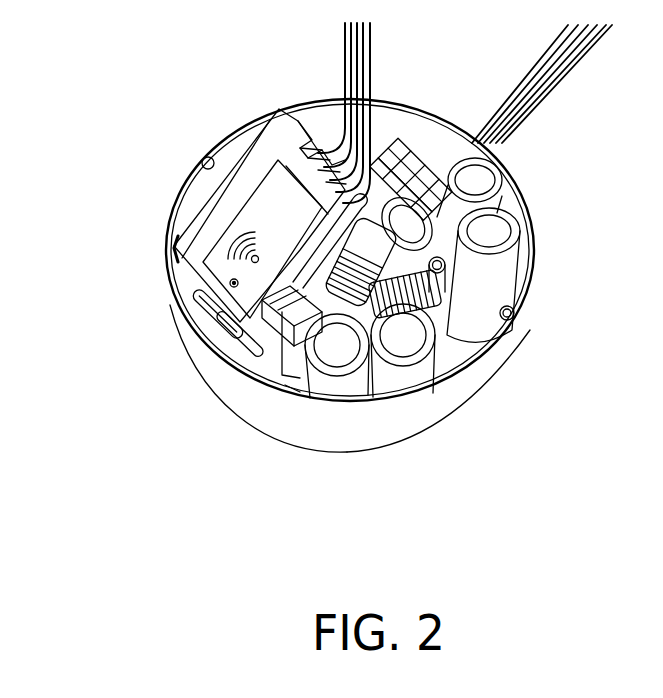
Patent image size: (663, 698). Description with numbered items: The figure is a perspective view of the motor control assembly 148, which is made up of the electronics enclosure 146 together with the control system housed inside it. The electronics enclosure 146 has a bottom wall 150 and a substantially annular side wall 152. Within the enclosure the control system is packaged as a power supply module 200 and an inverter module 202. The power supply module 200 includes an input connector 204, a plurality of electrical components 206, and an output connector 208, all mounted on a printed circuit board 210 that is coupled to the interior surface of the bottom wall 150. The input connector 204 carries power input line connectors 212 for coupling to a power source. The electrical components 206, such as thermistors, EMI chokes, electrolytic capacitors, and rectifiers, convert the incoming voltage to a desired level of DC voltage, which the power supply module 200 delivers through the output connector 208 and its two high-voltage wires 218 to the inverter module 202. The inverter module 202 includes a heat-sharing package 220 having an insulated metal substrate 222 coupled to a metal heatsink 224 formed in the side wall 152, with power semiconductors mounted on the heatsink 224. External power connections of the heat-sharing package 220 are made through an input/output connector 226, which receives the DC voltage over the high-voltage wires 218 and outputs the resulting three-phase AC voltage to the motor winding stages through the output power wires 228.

The electronics enclosure 146 is at (530, 211).
The motor control assembly 148 is at (120, 107).
The bottom wall 150 is at (380, 450).
The side wall 152 is at (463, 388).
The power supply module 200 is at (283, 375).
The inverter module 202 is at (165, 278).
The input connector 204 is at (430, 163).
The electrical components 206 is at (510, 250).
The output connector 208 is at (285, 385).
The printed circuit board 210 is at (273, 370).
The power input line connectors 212 is at (548, 95).
The high-voltage wires 218 is at (280, 345).
The heat-sharing package 220 is at (180, 243).
The insulated metal substrate 222 is at (207, 222).
The metal heatsink 224 is at (217, 195).
The input/output connector 226 is at (307, 147).
The output power wires 228 is at (373, 67).